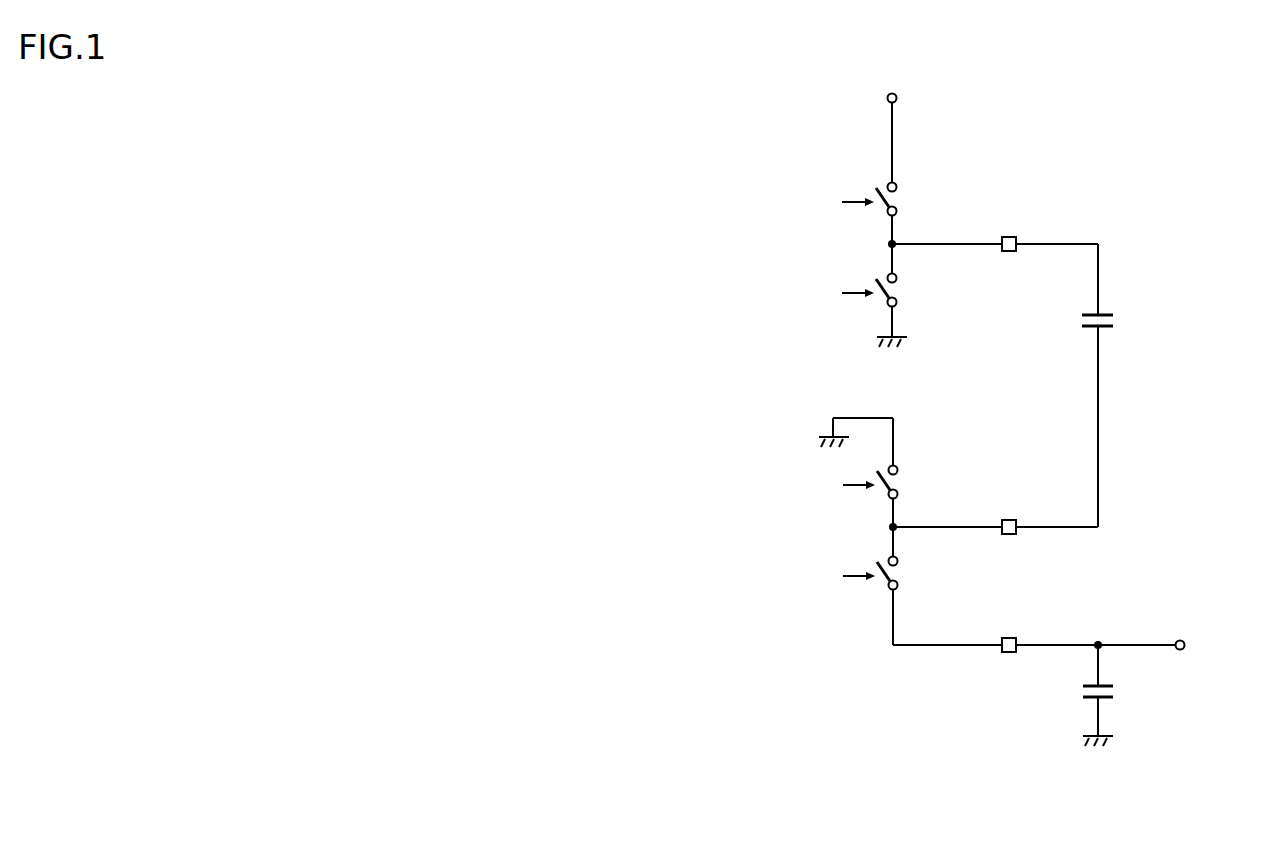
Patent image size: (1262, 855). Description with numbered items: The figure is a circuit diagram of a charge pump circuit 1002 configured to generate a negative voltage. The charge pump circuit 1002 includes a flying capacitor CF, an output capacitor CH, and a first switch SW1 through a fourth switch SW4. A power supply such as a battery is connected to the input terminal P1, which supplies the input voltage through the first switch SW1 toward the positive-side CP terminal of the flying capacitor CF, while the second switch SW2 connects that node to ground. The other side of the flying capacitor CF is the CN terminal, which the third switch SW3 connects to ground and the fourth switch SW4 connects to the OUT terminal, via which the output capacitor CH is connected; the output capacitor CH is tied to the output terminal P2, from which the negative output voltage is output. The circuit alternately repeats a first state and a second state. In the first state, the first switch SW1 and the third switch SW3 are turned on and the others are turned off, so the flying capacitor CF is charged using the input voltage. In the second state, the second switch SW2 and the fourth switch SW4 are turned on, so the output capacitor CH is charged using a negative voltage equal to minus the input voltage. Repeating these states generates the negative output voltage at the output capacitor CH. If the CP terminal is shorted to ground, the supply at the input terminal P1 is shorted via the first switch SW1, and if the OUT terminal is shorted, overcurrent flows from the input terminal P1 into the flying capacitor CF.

The input terminal P1 is at (897, 99).
The output terminal P2 is at (1180, 640).
The first switch SW1 is at (902, 198).
The second switch SW2 is at (904, 292).
The third switch SW3 is at (903, 480).
The fourth switch SW4 is at (903, 573).
The CP terminal CP is at (1009, 237).
The CN terminal CN is at (1009, 520).
The OUT terminal OUT is at (1009, 638).
The flying capacitor CF is at (1117, 321).
The output capacitor CH is at (1117, 692).
The charge pump circuit 1002 is at (1051, 822).